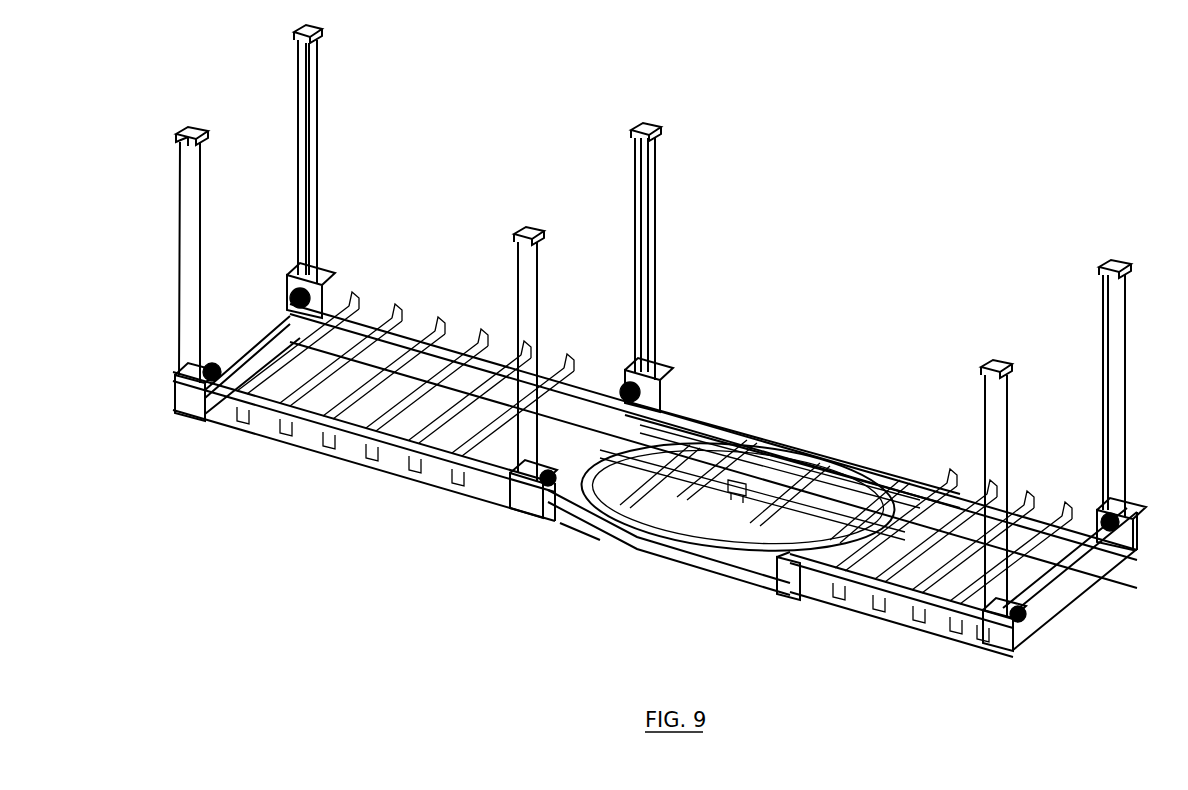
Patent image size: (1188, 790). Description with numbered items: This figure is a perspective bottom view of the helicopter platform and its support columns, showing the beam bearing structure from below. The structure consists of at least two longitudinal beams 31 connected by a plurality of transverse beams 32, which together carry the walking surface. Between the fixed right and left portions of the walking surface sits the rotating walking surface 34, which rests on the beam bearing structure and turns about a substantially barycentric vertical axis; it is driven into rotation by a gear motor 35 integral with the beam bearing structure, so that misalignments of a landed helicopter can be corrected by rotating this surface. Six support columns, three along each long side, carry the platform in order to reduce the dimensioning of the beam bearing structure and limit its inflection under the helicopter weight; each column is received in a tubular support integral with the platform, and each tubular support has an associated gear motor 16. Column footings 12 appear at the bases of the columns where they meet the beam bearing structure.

The corner block / post footing 12 is at (188, 406).
The post connector 16 is at (300, 292).
The frame rail of turntable section 31 is at (712, 440).
The cross beam 32 is at (440, 397).
The turntable section 34 is at (706, 578).
The center pivot 35 is at (738, 486).